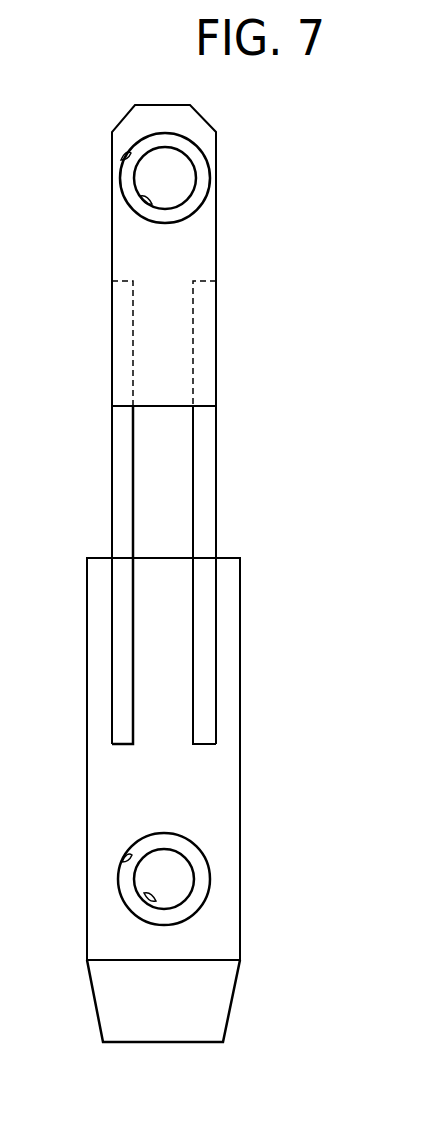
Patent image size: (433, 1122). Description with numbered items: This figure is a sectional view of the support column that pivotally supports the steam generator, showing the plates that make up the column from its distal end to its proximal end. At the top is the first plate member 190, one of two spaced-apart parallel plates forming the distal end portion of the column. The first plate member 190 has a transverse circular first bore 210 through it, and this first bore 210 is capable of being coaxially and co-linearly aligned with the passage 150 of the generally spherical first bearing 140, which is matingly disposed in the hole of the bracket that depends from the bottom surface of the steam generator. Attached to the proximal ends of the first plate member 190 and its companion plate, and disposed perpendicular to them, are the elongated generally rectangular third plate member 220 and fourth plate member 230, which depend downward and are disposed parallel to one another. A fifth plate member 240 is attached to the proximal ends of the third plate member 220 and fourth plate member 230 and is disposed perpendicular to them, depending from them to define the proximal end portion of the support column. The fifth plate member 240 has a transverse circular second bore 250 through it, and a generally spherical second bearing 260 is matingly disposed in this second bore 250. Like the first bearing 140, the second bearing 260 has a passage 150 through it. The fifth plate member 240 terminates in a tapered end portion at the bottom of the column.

The first bearing 140 is at (203, 177).
The passage 150 is at (142, 196).
The first plate member 190 is at (216, 248).
The first bore 210 is at (125, 157).
The third plate member 220 is at (112, 453).
The fourth plate member 230 is at (216, 453).
The fifth plate member 240 is at (88, 765).
The second bore 250 is at (127, 858).
The second bearing 260 is at (200, 877).